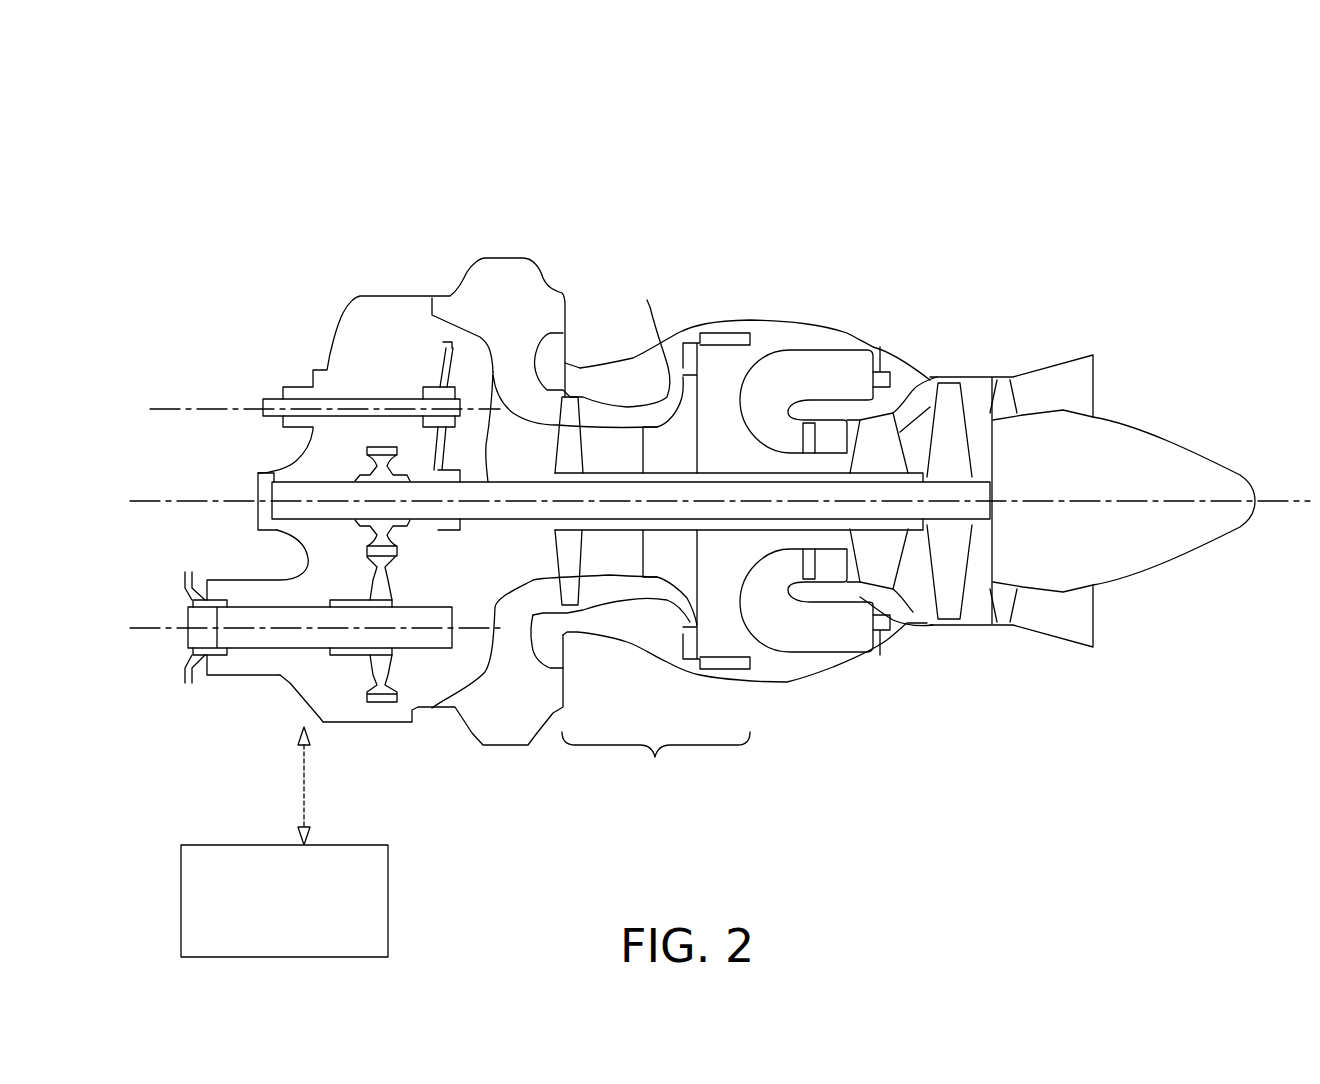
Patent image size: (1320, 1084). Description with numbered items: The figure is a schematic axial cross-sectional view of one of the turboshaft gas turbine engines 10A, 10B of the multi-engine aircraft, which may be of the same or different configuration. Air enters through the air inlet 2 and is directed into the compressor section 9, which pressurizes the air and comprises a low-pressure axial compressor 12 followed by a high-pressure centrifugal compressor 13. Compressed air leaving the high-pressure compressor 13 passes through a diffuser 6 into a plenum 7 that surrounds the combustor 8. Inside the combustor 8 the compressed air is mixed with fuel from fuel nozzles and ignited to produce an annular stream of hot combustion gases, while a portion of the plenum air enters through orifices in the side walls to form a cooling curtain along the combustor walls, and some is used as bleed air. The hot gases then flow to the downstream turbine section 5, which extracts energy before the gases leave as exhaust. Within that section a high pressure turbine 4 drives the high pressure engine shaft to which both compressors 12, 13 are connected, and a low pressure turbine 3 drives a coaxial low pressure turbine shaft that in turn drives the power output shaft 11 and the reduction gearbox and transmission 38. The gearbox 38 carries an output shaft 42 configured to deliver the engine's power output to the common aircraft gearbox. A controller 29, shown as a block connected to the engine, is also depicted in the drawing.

The air inlet 2 is at (505, 745).
The low pressure turbine 3 is at (927, 620).
The high pressure turbine 4 is at (873, 620).
The turbine section 5 is at (910, 566).
The diffuser 6 is at (720, 332).
The plenum 7 is at (792, 663).
The combustor 8 is at (810, 367).
The compressor section 9 is at (656, 766).
The gas turbine engine 10A is at (720, 501).
The gas turbine engine 10B is at (957, 172).
The power output shaft 11 is at (492, 370).
The low-pressure axial compressor 12 is at (580, 405).
The high-pressure centrifugal compressor 13 is at (650, 307).
The controller 29 is at (388, 872).
The reduction gearbox and transmission 38 is at (386, 358).
The output shaft 42 is at (258, 648).